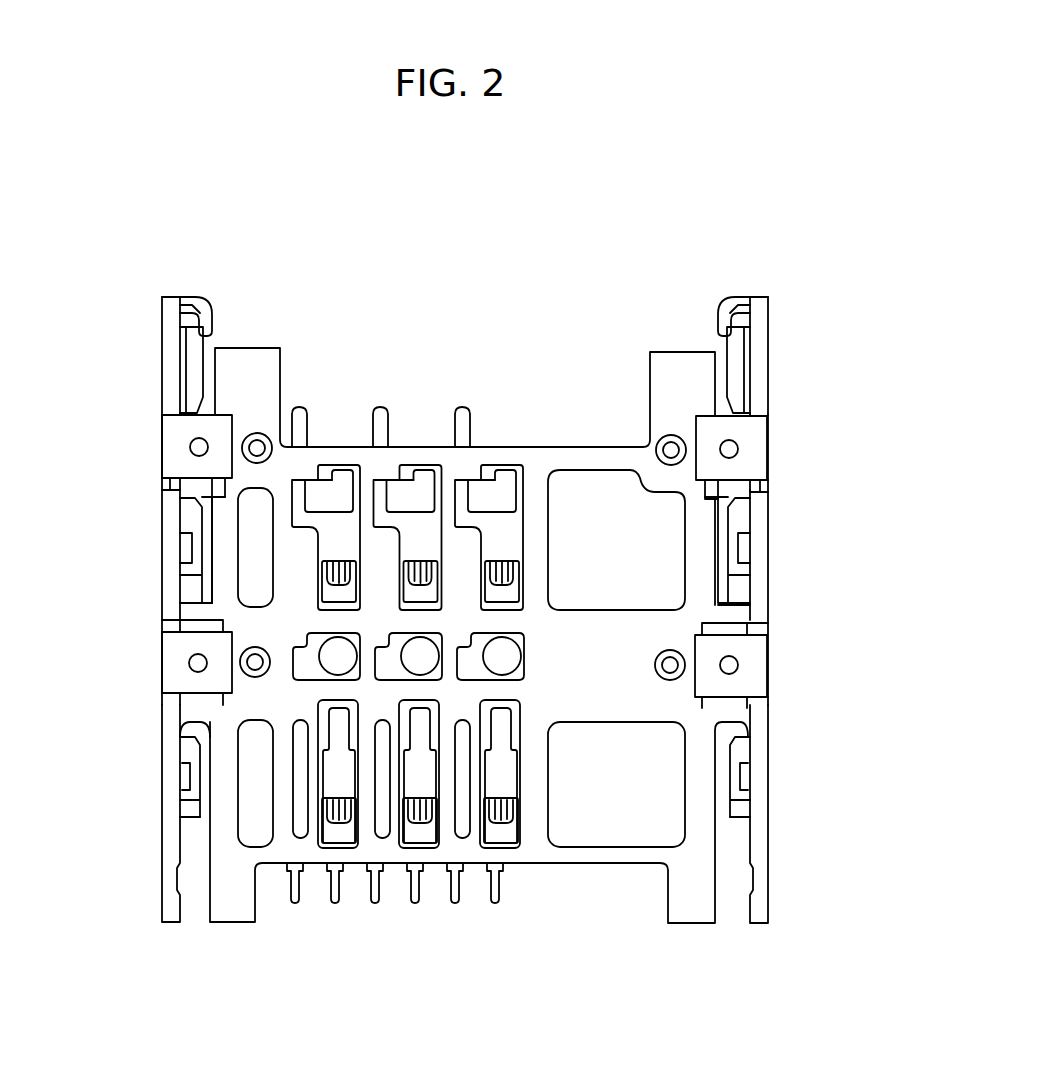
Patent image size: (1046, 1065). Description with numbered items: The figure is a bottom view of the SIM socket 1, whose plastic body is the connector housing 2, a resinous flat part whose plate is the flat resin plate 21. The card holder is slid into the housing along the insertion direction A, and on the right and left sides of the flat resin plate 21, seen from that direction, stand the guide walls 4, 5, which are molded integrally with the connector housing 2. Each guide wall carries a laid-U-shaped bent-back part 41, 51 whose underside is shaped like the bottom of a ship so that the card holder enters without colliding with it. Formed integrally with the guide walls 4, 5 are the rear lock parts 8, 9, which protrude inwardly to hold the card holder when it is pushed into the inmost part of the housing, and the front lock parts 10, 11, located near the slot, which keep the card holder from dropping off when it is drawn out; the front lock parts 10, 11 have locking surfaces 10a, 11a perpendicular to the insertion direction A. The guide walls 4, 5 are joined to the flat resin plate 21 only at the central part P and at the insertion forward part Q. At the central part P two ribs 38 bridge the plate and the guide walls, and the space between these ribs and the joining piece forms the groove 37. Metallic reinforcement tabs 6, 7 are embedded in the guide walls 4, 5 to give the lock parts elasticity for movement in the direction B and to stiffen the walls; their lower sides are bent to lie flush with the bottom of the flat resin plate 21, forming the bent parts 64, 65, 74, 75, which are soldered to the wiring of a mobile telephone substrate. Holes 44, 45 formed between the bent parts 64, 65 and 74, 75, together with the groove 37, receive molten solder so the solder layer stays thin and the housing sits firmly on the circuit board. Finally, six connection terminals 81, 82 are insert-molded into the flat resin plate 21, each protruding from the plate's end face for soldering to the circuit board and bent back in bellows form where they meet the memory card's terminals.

The SIM socket 1 is at (759, 192).
The connector housing 2 is at (508, 445).
The guide wall 4 is at (145, 566).
The guide wall 5 is at (783, 574).
The reinforcement tab 6 is at (167, 368).
The reinforcement tab 7 is at (763, 372).
The rear lock part 8 is at (177, 877).
The rear lock part 9 is at (750, 878).
The front lock part 10 is at (190, 306).
The locking surface 10a is at (214, 322).
The front lock part 11 is at (750, 308).
The locking surface 11a is at (707, 340).
The flat resin plate 21 is at (568, 700).
The groove 37 is at (190, 628).
The rib 38 is at (202, 612).
The bent-back part 41 is at (190, 360).
The hole 44 is at (206, 669).
The hole 45 is at (200, 440).
The bent-back part 51 is at (738, 360).
The bent part 64 is at (218, 433).
The bent part 65 is at (218, 652).
The bent part 74 is at (703, 435).
The bent part 75 is at (703, 655).
The connection terminal 81 is at (492, 778).
The connection terminal 82 is at (500, 527).
The insertion direction A is at (468, 320).
The direction B is at (395, 1027).
The central part P is at (780, 712).
The insertion forward part Q is at (780, 527).